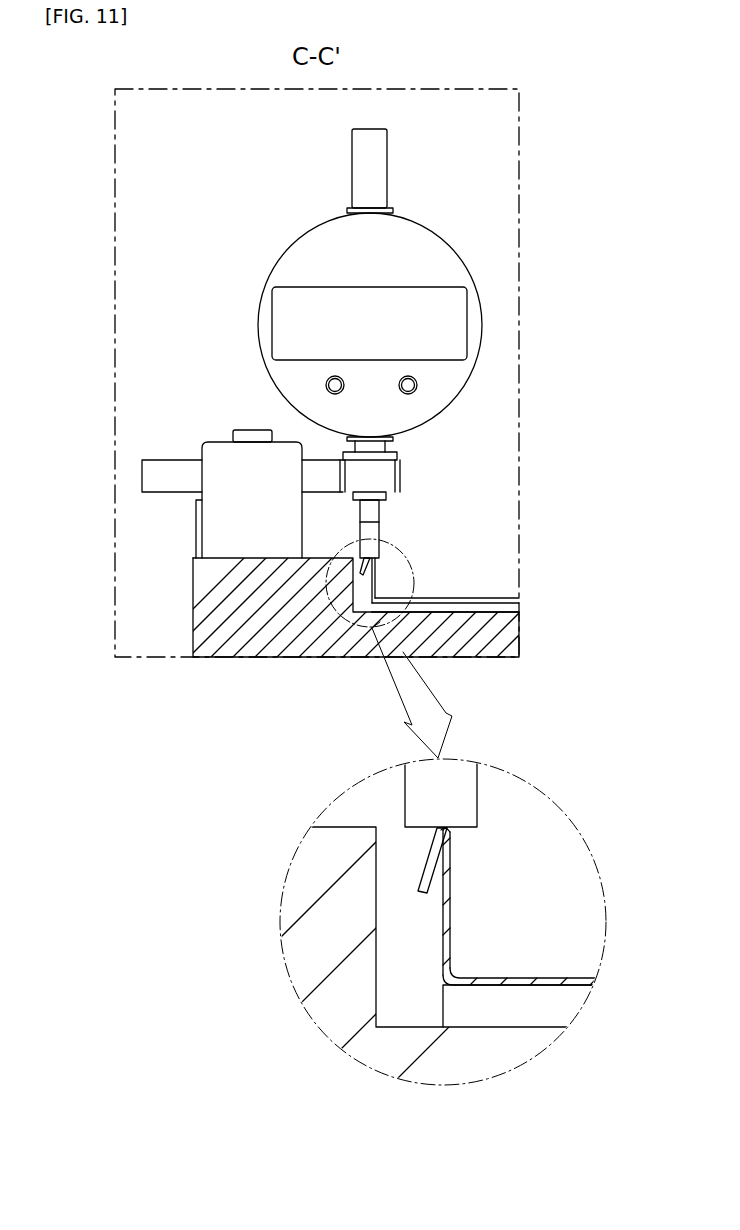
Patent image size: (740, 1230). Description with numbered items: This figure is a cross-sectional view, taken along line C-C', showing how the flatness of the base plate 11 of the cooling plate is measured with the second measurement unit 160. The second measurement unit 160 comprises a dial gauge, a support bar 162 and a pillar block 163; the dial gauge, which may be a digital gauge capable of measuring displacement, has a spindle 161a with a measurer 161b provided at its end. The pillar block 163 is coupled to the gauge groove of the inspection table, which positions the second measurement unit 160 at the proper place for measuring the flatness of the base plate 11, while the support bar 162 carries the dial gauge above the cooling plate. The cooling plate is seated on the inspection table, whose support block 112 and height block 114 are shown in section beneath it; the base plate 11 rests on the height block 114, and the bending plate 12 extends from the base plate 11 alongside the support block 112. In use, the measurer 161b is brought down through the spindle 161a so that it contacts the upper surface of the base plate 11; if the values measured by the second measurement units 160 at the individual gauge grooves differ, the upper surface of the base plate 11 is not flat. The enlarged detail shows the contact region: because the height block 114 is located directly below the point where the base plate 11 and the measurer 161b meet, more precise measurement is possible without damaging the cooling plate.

The second measurement unit 160 is at (492, 247).
The spindle 161a is at (370, 510).
The measurer 161b is at (377, 557).
The support bar 162 is at (157, 478).
The pillar block 163 is at (232, 528).
The support block 112 is at (320, 930).
The height block 114 is at (565, 1000).
The bending plate 12 is at (452, 902).
The base plate 11 is at (525, 978).